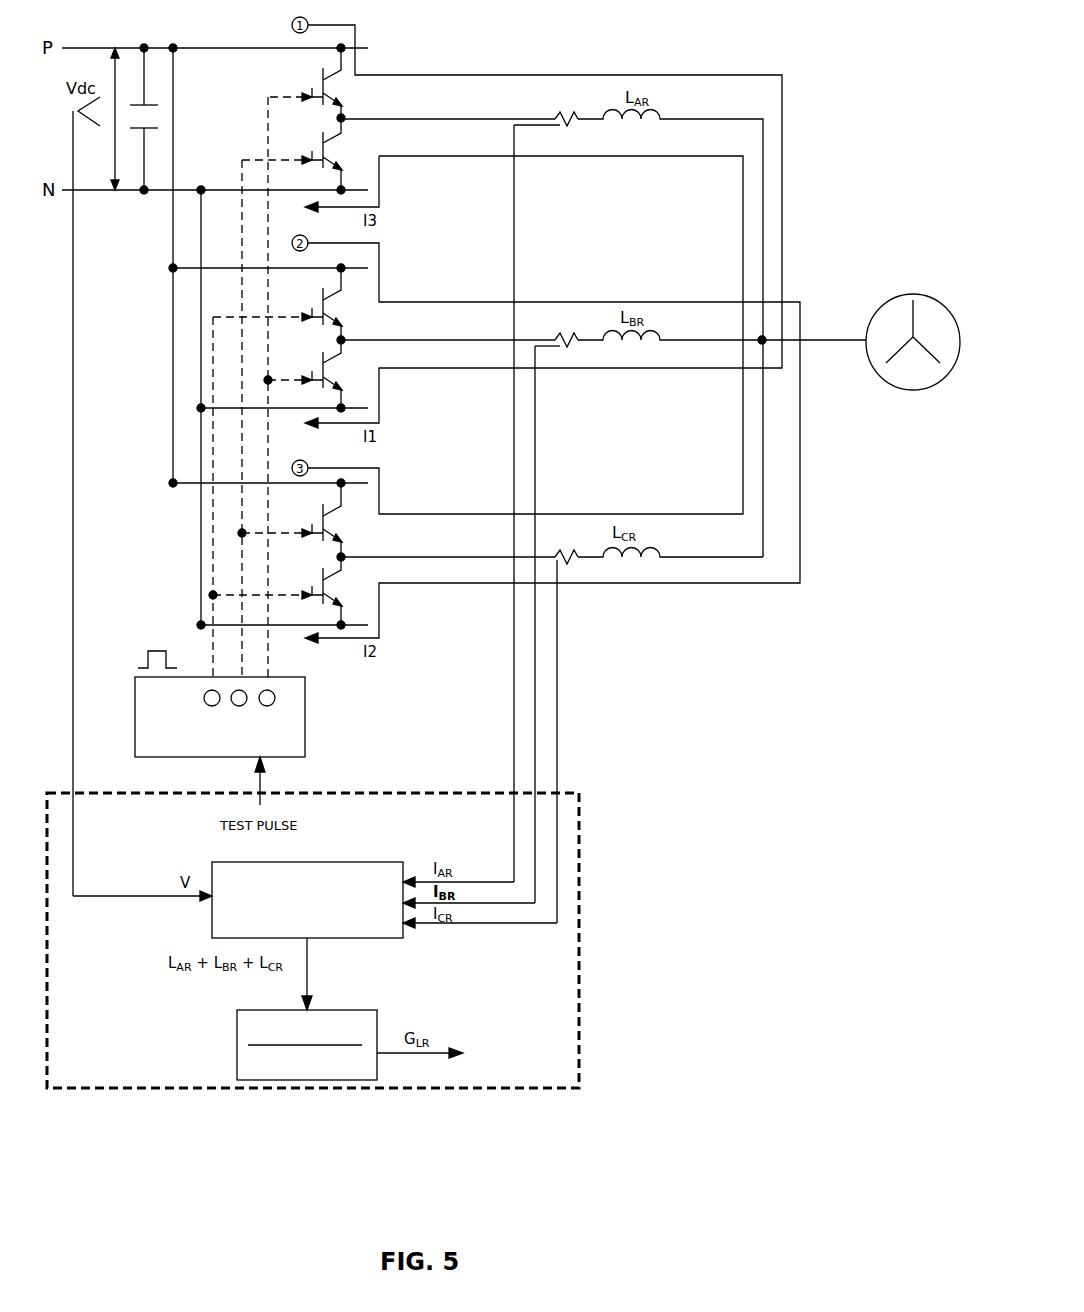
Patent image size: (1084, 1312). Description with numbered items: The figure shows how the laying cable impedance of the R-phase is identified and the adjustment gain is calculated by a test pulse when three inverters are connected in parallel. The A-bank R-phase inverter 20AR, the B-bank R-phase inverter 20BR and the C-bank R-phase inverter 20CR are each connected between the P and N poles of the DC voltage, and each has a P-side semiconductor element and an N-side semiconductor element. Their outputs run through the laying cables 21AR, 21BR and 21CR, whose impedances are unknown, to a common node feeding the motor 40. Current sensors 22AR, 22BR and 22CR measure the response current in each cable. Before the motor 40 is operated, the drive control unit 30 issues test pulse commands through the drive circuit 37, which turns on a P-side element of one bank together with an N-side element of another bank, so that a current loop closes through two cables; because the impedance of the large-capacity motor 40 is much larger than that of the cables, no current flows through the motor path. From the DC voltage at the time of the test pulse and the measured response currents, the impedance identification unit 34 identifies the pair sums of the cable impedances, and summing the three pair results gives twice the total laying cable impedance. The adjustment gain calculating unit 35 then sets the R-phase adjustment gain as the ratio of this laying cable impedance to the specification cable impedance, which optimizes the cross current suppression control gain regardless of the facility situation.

The A-bank R-phase inverter 20AR is at (298, 114).
The B-bank R-phase inverter 20BR is at (298, 334).
The C-bank R-phase inverter 20CR is at (298, 554).
The A-bank R-phase laying cable 21AR is at (464, 117).
The B-bank R-phase laying cable 21BR is at (470, 339).
The C-bank R-phase laying cable 21CR is at (468, 555).
The current sensor 22AR is at (567, 114).
The current sensor 22BR is at (567, 336).
The current sensor 22CR is at (570, 552).
The drive control unit 30 is at (592, 886).
The impedance identification unit 34 is at (392, 862).
The adjustment gain calculating unit 35 is at (237, 1042).
The drive circuit 37 is at (306, 713).
The motor 40 is at (912, 294).